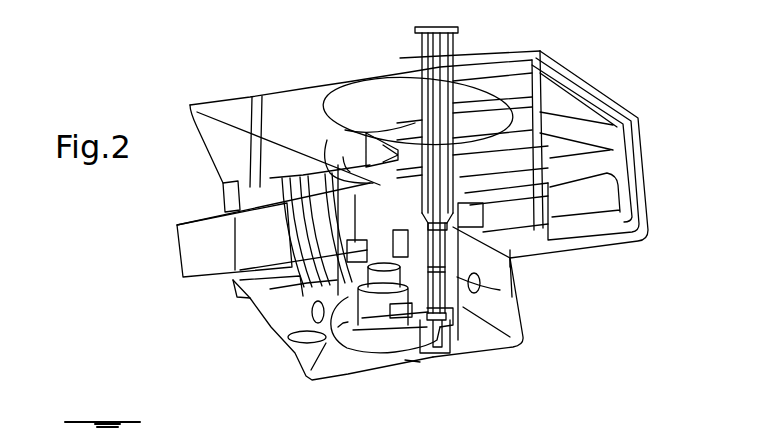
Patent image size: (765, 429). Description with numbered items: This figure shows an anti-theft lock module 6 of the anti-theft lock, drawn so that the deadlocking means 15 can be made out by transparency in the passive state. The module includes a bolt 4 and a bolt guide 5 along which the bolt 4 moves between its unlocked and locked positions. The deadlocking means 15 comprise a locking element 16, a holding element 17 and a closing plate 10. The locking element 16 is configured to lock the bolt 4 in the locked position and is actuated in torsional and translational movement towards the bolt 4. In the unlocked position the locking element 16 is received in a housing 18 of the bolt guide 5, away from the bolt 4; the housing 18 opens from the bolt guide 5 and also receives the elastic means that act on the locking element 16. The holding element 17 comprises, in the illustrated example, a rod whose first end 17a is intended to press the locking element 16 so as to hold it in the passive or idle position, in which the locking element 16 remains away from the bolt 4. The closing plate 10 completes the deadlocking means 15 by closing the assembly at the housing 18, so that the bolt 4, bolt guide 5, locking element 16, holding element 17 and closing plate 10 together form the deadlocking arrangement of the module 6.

The bolt 4 is at (188, 250).
The bolt guide 5 is at (419, 215).
The dispensing unit 6 is at (385, 217).
The closing plate 10 is at (372, 350).
The deadlocking means 15 is at (459, 336).
The locking element 16 is at (341, 323).
The holding element 17 is at (455, 53).
The first end 17a is at (518, 292).
The housing 18 is at (415, 358).